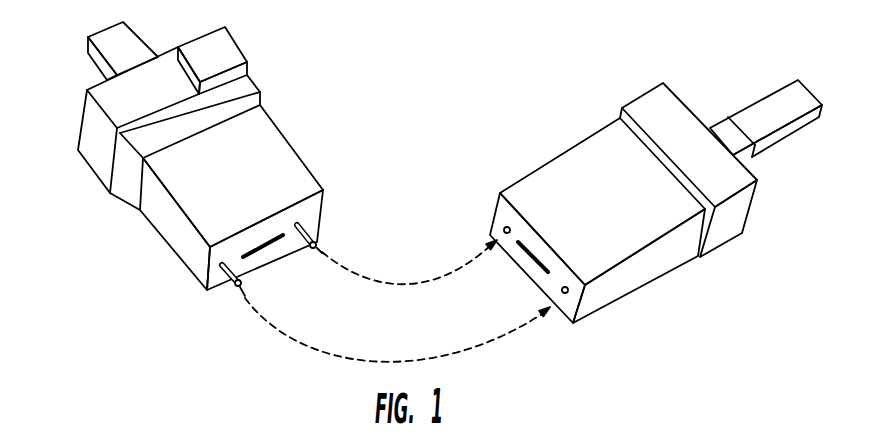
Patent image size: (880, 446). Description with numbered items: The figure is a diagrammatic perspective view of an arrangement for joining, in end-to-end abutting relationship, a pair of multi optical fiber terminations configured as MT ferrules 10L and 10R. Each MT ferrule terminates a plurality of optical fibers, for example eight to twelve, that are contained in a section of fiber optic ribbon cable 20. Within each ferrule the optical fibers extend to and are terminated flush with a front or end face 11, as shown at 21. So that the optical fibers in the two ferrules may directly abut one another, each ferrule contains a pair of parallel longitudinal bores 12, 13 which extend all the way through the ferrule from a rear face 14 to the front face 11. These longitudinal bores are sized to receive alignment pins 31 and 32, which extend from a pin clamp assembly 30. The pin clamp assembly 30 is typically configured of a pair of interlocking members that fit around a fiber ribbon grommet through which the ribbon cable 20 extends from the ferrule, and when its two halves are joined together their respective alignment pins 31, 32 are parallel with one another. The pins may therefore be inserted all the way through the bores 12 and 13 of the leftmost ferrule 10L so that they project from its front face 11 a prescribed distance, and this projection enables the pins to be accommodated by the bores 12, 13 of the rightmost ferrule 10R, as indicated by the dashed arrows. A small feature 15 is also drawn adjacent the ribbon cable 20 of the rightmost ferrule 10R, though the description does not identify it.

The MT ferrule 10L is at (288, 145).
The MT ferrule 10R is at (638, 270).
The front or end face 11 is at (317, 207).
The longitudinal bore 12 is at (496, 234).
The longitudinal bore 13 is at (566, 296).
The rear face 14 is at (108, 150).
The step on tab 15 is at (740, 122).
The fiber optic ribbon cable 20 is at (88, 54).
The terminated optical fibers 21 is at (286, 247).
The pin clamp assembly 30 is at (208, 50).
The alignment pin 31 is at (317, 243).
The alignment pin 32 is at (241, 282).